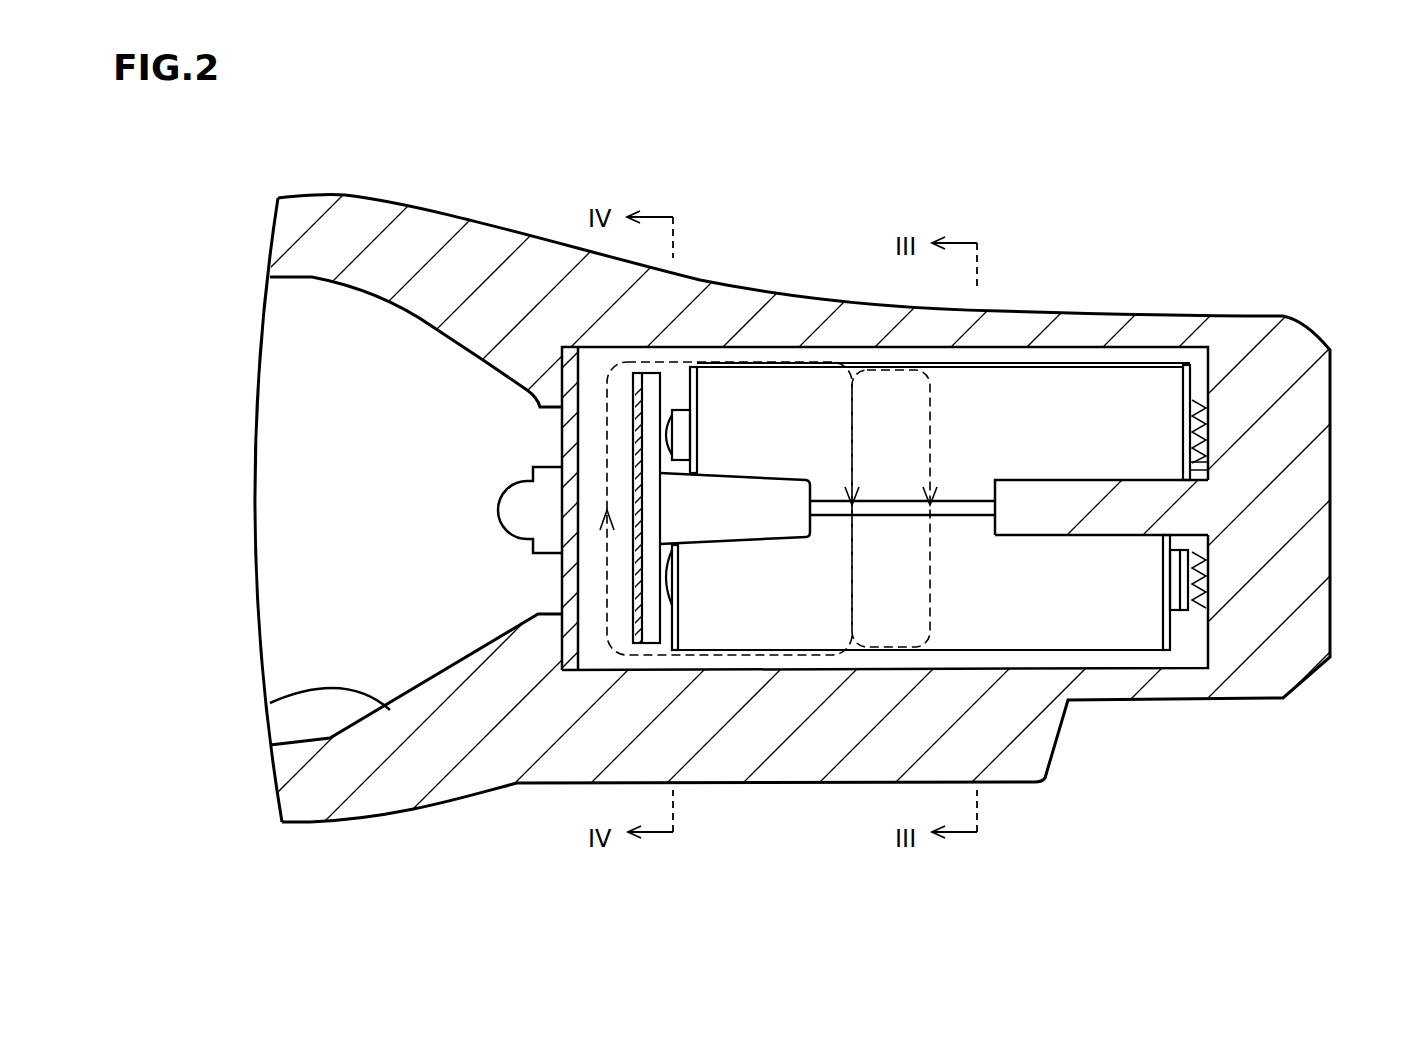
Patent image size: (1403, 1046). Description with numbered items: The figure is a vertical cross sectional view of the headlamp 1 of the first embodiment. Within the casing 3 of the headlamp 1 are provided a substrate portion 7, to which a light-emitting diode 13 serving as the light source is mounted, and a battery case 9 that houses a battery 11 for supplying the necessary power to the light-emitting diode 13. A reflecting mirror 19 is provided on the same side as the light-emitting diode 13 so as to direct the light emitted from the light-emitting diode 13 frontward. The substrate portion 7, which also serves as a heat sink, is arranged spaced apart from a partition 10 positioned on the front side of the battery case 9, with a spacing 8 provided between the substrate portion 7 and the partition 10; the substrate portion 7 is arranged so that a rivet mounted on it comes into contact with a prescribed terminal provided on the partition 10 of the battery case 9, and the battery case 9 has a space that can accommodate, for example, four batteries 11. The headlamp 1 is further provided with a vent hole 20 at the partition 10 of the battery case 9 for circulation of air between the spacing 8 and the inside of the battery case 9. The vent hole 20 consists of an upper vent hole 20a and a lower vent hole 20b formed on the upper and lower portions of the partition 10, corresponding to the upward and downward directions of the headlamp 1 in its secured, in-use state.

The headlamp 1 is at (388, 185).
The casing 3 is at (1073, 312).
The substrate portion 7 is at (562, 570).
The spacing 8 is at (590, 578).
The battery case 9 is at (813, 663).
The partition 10 is at (655, 607).
The battery 11 is at (1107, 613).
The light-emitting diode 13 is at (517, 512).
The reflecting mirror 19 is at (270, 703).
The vent hole 20 is at (768, 528).
The upper vent hole 20a is at (667, 357).
The lower vent hole 20b is at (700, 660).